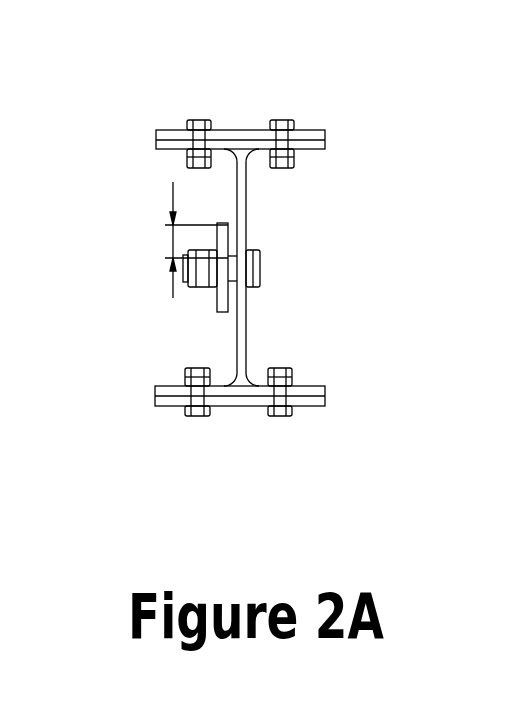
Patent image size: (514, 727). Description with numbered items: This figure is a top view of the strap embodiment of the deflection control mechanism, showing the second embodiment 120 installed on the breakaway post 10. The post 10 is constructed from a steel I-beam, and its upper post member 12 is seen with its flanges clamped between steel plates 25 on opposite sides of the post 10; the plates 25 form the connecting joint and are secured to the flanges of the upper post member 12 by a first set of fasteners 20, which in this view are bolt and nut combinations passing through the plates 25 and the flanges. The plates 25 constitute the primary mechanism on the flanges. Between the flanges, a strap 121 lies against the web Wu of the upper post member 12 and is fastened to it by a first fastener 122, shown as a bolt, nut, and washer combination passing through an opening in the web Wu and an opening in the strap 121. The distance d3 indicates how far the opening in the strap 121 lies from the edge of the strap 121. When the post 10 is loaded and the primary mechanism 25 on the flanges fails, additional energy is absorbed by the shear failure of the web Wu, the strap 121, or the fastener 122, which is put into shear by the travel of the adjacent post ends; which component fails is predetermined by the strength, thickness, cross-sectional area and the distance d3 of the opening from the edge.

The first set of fasteners 20 is at (15, 40).
The breakaway post 10 is at (354, 254).
The upper post member 12 is at (181, 268).
The steel plates 25 is at (264, 266).
The second embodiment of the deflection control mechanism 120 is at (227, 312).
The strap 121 is at (129, 312).
The first fastener 122 is at (262, 278).
The distance of the opening from the edge d3 is at (172, 242).
The web of the upper post member Wu is at (248, 342).